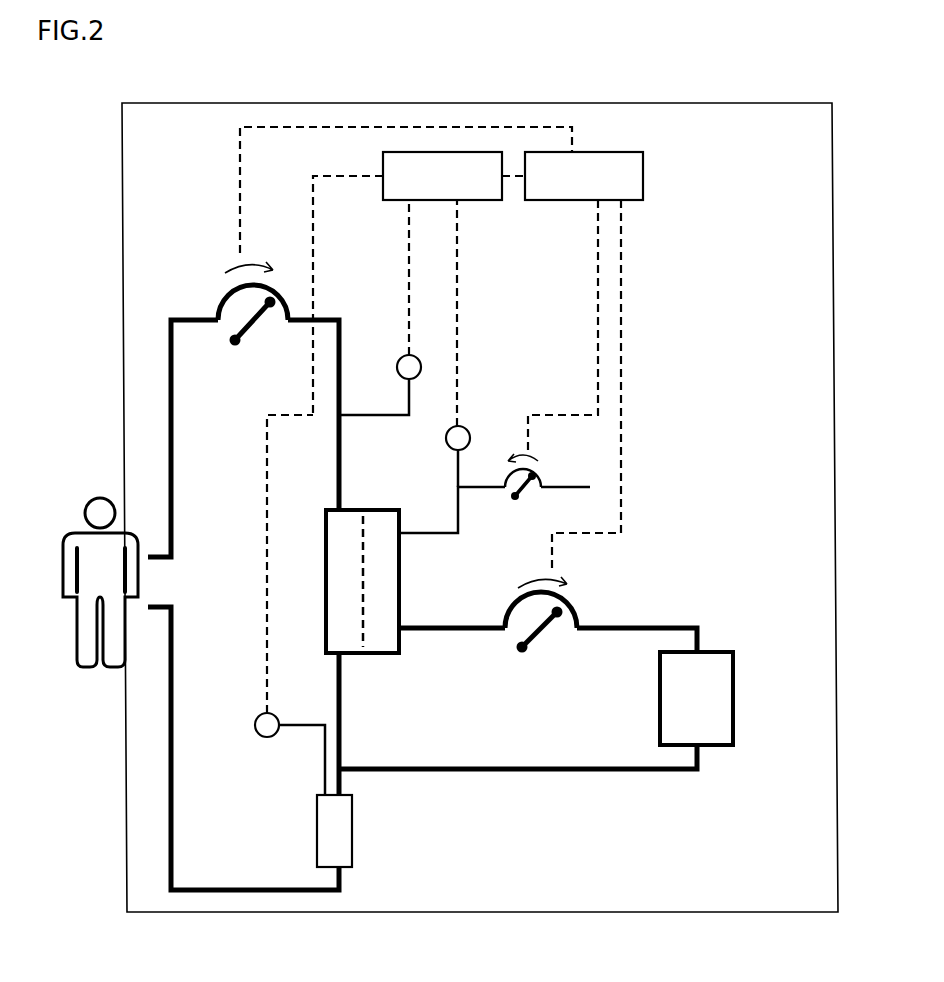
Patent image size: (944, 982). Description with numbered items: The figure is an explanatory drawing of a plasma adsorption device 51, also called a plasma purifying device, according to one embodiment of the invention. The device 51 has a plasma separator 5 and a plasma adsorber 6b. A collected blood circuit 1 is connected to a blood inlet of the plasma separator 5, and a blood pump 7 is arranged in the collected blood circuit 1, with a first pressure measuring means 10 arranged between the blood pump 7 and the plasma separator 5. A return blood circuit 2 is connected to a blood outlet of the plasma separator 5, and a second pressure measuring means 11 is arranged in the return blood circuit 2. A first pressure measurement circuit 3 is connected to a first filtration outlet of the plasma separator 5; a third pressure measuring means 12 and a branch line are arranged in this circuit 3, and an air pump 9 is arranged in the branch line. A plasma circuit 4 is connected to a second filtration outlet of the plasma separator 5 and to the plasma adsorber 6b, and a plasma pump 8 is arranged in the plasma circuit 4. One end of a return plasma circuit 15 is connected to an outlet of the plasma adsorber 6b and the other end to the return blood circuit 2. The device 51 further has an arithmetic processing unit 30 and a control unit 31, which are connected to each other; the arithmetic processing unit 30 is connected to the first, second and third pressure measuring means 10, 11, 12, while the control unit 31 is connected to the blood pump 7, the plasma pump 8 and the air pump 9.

The collected blood circuit 1 is at (180, 442).
The return blood circuit 2 is at (177, 825).
The first pressure measurement circuit 3 is at (463, 520).
The plasma circuit 4 is at (423, 642).
The plasma separator 5 is at (320, 570).
The plasma adsorber 6b is at (742, 663).
The blood pump 7 is at (217, 303).
The plasma pump 8 is at (577, 610).
The air pump 9 is at (540, 473).
The first pressure measuring means 10 is at (433, 363).
The second pressure measuring means 11 is at (268, 700).
The third pressure measuring means 12 is at (477, 435).
The return plasma circuit 15 is at (467, 760).
The arithmetic processing unit 30 is at (487, 200).
The control unit 31 is at (643, 200).
The plasma adsorption device 51 is at (463, 912).